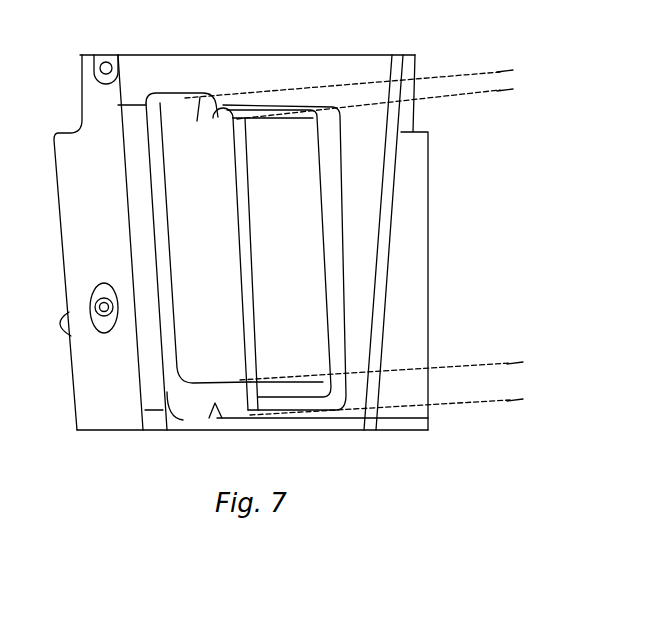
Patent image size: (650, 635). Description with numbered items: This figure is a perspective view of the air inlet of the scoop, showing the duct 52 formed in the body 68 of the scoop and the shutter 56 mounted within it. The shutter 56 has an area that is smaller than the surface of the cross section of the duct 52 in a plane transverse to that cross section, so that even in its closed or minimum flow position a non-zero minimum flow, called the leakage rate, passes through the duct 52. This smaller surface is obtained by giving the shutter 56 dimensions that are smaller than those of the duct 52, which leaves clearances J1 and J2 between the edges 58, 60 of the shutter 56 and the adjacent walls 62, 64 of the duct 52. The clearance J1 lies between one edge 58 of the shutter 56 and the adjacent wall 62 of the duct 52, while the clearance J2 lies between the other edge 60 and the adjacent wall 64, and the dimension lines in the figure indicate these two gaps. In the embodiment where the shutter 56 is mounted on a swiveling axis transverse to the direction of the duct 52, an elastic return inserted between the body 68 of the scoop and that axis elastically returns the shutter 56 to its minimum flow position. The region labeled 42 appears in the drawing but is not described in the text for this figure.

The recess 42 is at (203, 420).
The duct 52 is at (227, 393).
The shutter 56 is at (197, 333).
The edge of the shutter 58 is at (220, 383).
The edge of the shutter 60 is at (187, 123).
The wall of the duct 62 is at (178, 108).
The wall of the duct 64 is at (216, 408).
The body of the scoop 68 is at (363, 235).
The clearance J1 is at (500, 52).
The clearance J2 is at (510, 345).